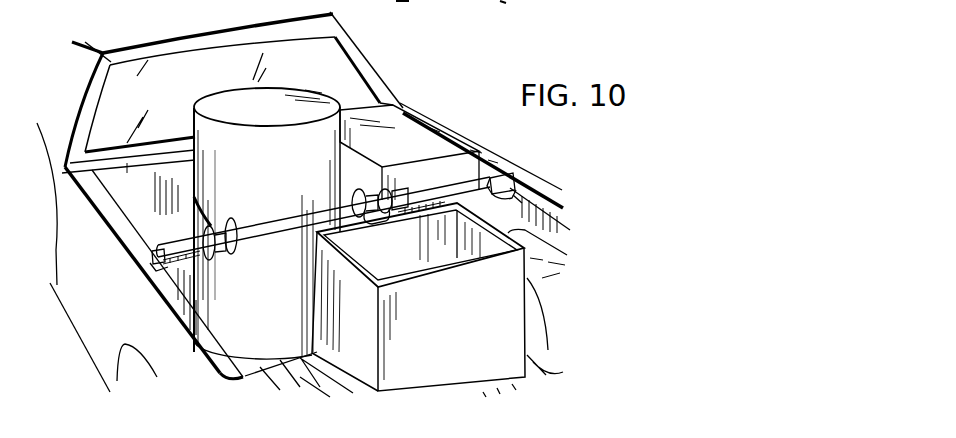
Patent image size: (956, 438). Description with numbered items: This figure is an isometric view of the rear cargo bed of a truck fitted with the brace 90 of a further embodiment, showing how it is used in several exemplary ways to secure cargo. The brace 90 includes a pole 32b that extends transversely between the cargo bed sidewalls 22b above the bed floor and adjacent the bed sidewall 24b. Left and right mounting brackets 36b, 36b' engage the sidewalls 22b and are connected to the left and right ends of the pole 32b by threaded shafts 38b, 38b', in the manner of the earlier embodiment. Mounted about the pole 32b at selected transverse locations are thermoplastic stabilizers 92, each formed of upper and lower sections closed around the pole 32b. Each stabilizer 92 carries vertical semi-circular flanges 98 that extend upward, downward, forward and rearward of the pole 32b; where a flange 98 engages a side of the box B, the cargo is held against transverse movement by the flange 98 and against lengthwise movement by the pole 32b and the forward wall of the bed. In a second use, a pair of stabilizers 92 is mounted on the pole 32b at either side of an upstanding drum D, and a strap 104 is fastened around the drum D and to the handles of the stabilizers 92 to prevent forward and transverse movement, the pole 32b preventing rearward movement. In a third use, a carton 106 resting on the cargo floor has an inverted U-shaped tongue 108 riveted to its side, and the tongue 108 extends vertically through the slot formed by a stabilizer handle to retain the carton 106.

The drum D is at (286, 90).
The box B is at (404, 119).
The brace 90 is at (458, 182).
The stabilizer 92 is at (372, 190).
The vertical semi-circular flange 98 is at (402, 190).
The inverted U-shaped tongue 108 is at (380, 223).
The strap 104 is at (197, 215).
The pole 32b is at (278, 225).
The cargo bed sidewall 22b is at (123, 228).
The side wall 24b is at (232, 374).
The left mounting bracket 36b is at (133, 260).
The threaded shaft 38b is at (129, 286).
The right mounting bracket 36b' is at (543, 168).
The threaded shaft 38b' is at (557, 184).
The carton 106 is at (507, 308).